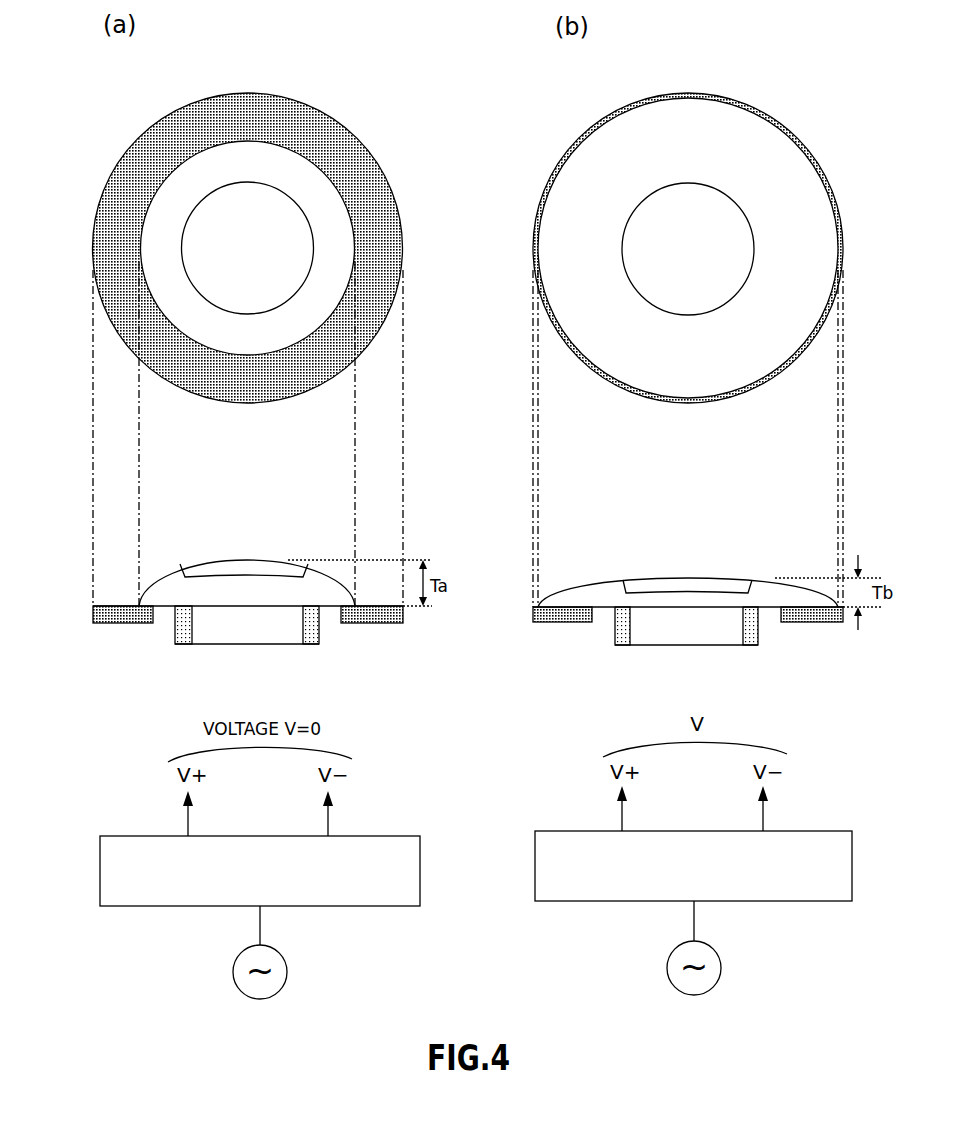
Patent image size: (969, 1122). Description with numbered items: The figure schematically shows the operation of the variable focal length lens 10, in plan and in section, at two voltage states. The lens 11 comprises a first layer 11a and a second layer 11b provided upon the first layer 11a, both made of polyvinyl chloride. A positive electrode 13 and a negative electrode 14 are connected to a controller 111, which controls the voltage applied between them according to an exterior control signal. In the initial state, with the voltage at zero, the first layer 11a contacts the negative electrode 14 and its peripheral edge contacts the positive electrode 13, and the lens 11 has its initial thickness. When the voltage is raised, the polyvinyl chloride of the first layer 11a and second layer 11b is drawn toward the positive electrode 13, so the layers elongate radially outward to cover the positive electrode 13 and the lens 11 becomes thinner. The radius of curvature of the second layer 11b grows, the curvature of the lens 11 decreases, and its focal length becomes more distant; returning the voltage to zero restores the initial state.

The variable focal length lens 10 is at (342, 90).
The lens 11 is at (52, 456).
The first layer 11a is at (193, 195).
The second layer 11b is at (243, 200).
The positive electrode 13 is at (115, 237).
The negative electrode 14 is at (175, 635).
The controller 111 is at (100, 866).